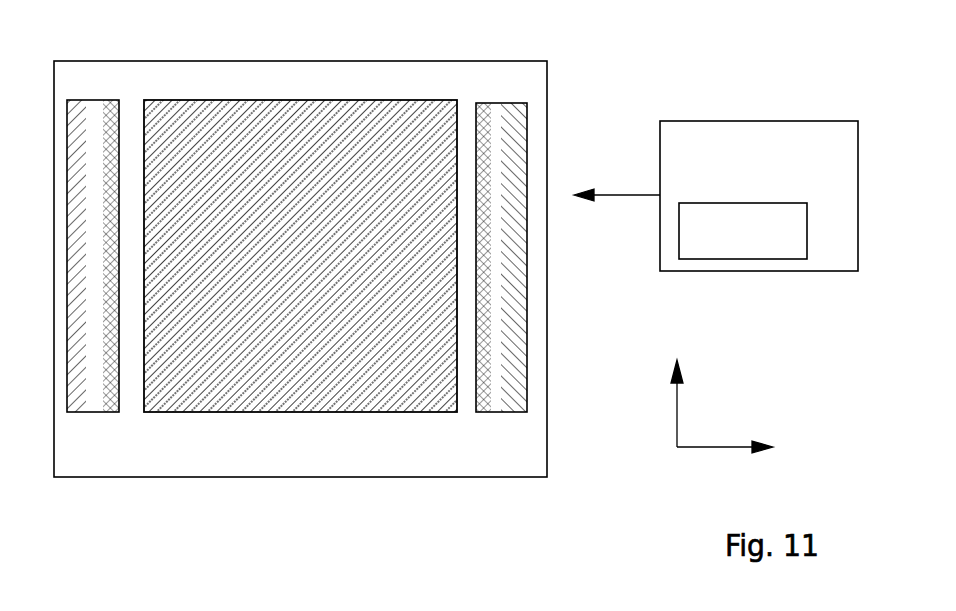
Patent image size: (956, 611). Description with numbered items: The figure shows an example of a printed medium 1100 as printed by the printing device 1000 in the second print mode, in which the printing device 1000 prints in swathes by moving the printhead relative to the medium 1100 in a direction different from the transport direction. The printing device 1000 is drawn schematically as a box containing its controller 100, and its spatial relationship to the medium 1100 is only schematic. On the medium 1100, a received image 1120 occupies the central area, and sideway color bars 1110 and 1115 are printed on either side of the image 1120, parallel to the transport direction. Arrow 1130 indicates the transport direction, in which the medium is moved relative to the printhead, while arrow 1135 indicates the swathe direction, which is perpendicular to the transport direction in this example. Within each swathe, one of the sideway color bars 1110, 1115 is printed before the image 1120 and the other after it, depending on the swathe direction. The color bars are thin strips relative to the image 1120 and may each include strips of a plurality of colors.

The printed medium 1100 is at (78, 60).
The sideway color bar 1110 is at (92, 413).
The sideway color bar 1115 is at (505, 414).
The received image 1120 is at (273, 413).
The printing device 1000 is at (735, 117).
The controller 100 is at (755, 200).
The transport direction 1130 is at (677, 399).
The swathe direction 1135 is at (690, 442).